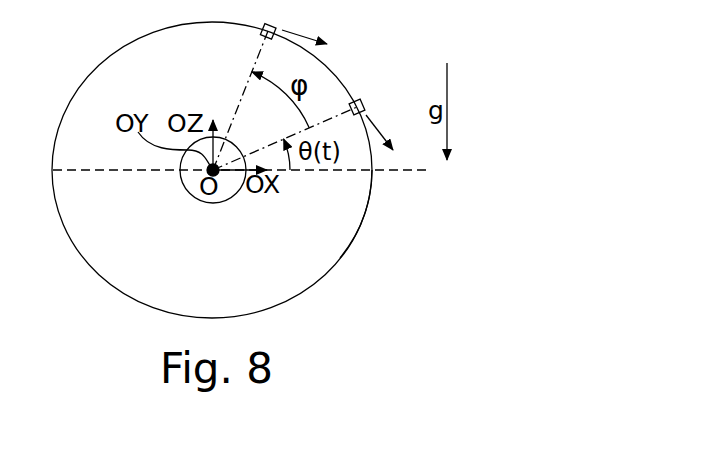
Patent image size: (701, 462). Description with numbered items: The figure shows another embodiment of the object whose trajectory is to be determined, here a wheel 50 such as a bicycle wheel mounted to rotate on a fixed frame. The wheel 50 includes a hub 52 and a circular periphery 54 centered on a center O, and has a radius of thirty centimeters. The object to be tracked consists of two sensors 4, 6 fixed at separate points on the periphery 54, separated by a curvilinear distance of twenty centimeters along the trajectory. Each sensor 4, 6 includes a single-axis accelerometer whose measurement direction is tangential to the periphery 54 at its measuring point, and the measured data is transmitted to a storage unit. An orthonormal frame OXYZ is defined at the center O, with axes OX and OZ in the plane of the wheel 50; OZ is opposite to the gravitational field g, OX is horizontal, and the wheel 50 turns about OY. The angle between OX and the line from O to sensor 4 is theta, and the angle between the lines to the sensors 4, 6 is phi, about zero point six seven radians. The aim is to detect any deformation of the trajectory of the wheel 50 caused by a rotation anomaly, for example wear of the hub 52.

The sensor 4 is at (303, 132).
The sensor 6 is at (270, 87).
The wheel 50 is at (332, 252).
The hub 52 is at (196, 197).
The circular periphery 54 is at (365, 222).